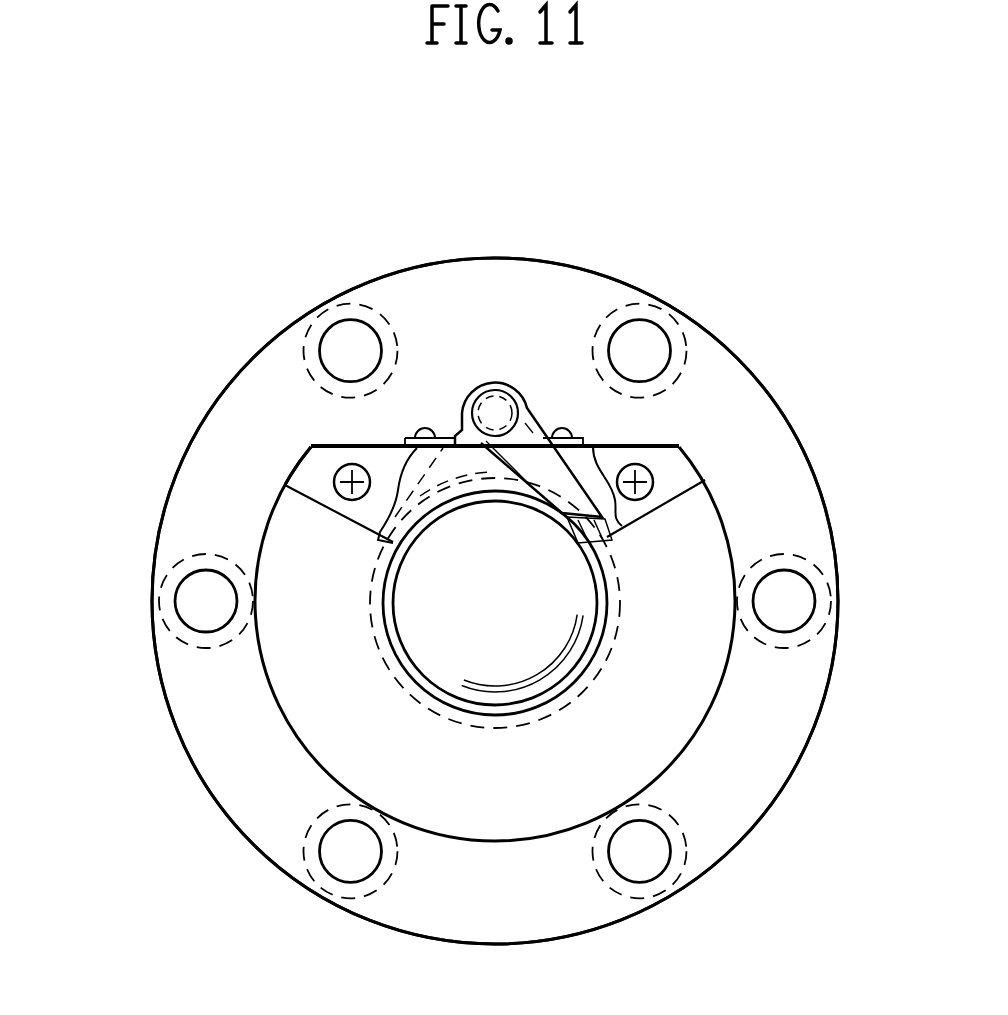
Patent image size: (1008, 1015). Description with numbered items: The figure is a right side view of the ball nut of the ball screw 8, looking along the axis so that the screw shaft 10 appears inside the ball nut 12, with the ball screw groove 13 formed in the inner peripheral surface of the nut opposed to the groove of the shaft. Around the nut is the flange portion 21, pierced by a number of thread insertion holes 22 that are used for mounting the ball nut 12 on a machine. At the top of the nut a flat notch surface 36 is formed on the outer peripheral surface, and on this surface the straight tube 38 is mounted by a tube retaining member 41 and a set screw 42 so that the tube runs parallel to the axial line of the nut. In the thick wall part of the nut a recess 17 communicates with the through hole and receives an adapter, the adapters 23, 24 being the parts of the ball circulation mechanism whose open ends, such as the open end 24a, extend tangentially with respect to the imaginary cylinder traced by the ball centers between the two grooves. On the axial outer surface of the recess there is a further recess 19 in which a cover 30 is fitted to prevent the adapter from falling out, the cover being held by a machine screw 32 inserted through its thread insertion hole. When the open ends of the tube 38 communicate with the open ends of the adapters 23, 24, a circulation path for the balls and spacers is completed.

The ball screw 8 is at (630, 172).
The screw shaft 10 is at (572, 592).
The ball nut 12 is at (532, 845).
The ball screw groove 13 is at (592, 680).
The recess 17 is at (590, 447).
The recess for cover 19 is at (383, 545).
The flange portion 21 is at (182, 680).
The thread insertion hole 22 is at (196, 603).
The adapter 23 is at (428, 436).
The adapter 24 is at (548, 437).
The open end of adapter 24a is at (613, 556).
The cover 30 is at (316, 457).
The machine screw 32 is at (288, 470).
The flat notch surface 36 is at (372, 445).
The straight tube 38 is at (466, 392).
The tube retaining member 41 is at (495, 388).
The set screw 42 is at (572, 437).